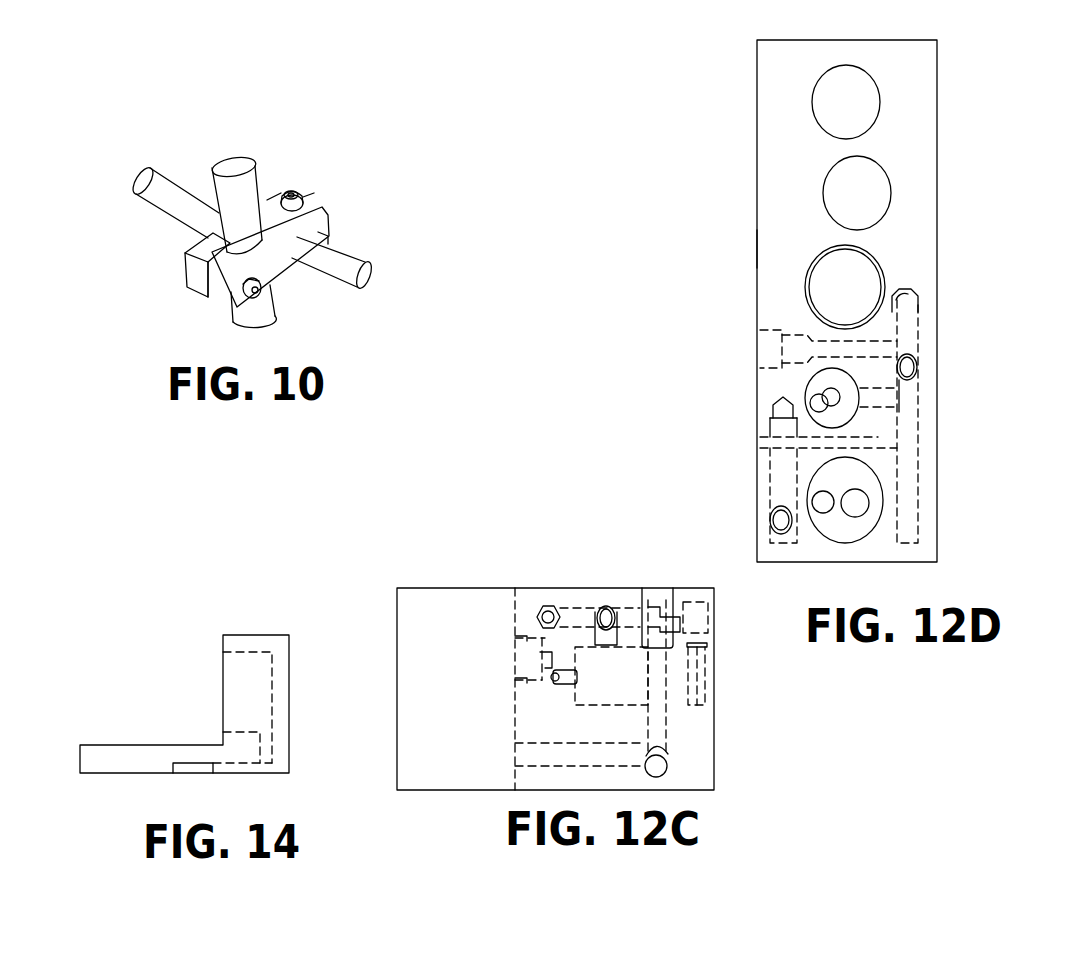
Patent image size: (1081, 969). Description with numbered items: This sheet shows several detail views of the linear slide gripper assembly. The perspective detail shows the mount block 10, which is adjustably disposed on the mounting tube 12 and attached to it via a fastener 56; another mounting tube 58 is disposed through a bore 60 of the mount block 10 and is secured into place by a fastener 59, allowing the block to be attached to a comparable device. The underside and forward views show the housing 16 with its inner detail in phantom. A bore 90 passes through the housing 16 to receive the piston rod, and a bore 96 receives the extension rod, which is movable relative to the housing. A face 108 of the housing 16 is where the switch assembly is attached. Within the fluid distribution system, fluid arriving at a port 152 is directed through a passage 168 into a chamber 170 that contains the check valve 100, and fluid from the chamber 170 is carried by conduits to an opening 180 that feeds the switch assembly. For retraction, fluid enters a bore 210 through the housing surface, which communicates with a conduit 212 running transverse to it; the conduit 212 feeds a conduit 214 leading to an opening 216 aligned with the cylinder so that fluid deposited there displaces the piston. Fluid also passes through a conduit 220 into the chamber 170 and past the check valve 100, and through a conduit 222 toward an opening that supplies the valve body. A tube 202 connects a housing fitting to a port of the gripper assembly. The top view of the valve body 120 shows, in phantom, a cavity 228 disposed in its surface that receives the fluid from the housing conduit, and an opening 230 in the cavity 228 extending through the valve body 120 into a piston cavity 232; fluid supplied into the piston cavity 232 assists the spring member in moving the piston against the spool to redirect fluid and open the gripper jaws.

In FIG. 10, the mount block 10 is at (303, 201).
In FIG. 10, the mounting tube 12 is at (178, 184).
In FIG. 10, the fastener 56 is at (303, 196).
In FIG. 10, the mounting tube 58 is at (238, 186).
In FIG. 10, the fastener 59 is at (243, 288).
In FIG. 10, the bore 60 is at (266, 243).
In FIG. 12D, the housing 16 is at (730, 160).
In FIG. 12C, the housing 16 is at (735, 760).
In FIG. 12D, the bore 90 is at (877, 263).
In FIG. 12D, the bore 96 is at (883, 513).
In FIG. 12D, the check valve 100 is at (825, 386).
In FIG. 12D, the face 108 is at (757, 249).
In FIG. 12C, the port 152 is at (515, 655).
In FIG. 12C, the passage 168 is at (552, 647).
In FIG. 12D, the chamber 170 is at (858, 381).
In FIG. 12C, the chamber 170 is at (683, 707).
In FIG. 12C, the opening 180 is at (553, 595).
In FIG. 12D, the tube 202 is at (835, 513).
In FIG. 12D, the bore 210 is at (758, 349).
In FIG. 12C, the bore 210 is at (678, 588).
In FIG. 12D, the conduit 212 is at (913, 327).
In FIG. 12C, the conduit 214 is at (546, 741).
In FIG. 12C, the opening 216 is at (513, 758).
In FIG. 12D, the conduit 220 is at (886, 406).
In FIG. 12D, the conduit 222 is at (880, 440).
In FIG. 14, the valve body 120 is at (288, 628).
In FIG. 14, the cavity 228 is at (220, 770).
In FIG. 14, the opening 230 is at (267, 747).
In FIG. 14, the piston cavity 232 is at (238, 695).